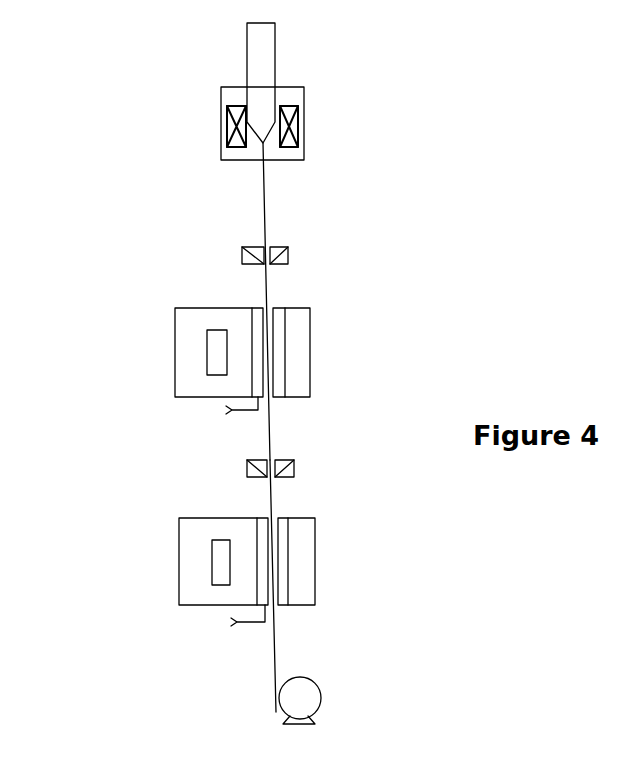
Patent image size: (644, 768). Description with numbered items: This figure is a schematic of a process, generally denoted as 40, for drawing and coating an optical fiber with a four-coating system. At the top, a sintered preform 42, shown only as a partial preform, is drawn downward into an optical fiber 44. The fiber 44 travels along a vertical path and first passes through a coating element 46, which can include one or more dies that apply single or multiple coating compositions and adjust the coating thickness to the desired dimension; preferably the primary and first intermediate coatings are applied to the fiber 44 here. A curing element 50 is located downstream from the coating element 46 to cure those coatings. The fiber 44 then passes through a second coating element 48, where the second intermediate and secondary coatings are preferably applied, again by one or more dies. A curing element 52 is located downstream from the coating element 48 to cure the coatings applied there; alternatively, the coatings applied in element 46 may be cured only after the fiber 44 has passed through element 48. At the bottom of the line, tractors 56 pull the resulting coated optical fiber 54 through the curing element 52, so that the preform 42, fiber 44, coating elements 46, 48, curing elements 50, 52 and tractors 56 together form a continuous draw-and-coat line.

The process for manufacturing a coated optical fiber 40 is at (158, 204).
The sintered preform 42 is at (270, 36).
The optical fiber 44 is at (266, 195).
The coating element 46 is at (289, 255).
The coating element 48 is at (296, 468).
The curing element 50 is at (285, 347).
The curing element 52 is at (289, 563).
The coated optical fiber 54 is at (276, 650).
The tractors 56 is at (318, 707).